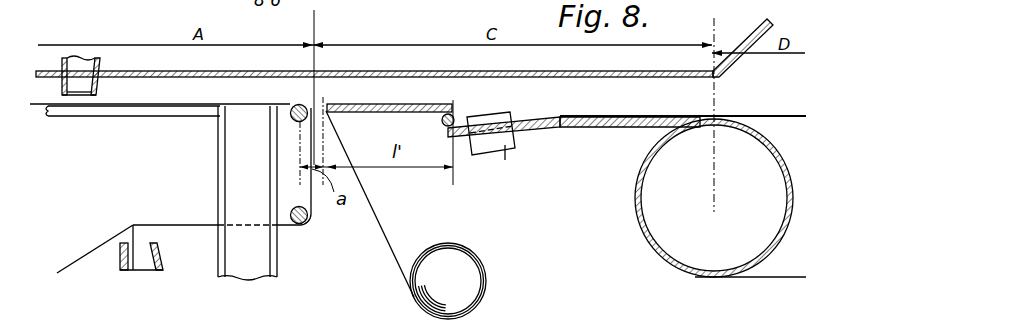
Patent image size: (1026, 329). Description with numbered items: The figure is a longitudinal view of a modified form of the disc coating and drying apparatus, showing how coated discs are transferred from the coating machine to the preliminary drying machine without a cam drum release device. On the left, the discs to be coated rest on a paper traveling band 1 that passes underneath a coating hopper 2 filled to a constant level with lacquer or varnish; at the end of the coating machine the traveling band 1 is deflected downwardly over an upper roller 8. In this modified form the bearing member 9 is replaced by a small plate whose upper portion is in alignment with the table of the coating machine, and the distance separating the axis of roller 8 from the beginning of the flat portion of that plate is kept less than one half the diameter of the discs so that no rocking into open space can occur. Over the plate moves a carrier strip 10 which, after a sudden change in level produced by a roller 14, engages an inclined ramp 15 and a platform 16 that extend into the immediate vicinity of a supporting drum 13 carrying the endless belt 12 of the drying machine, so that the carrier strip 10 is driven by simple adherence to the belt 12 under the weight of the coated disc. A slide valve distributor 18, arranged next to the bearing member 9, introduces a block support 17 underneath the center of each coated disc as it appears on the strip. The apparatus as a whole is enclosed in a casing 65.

The paper traveling band 1 is at (40, 96).
The coating hopper 2 is at (100, 69).
The casing 65 is at (228, 71).
The upper roller 8 is at (292, 106).
The bearing member 9 is at (392, 113).
The carrier strip 10 is at (414, 104).
The endless belt 12 is at (774, 117).
The supporting drum 13 is at (779, 162).
The roller 14 is at (455, 117).
The inclined ramp 15 is at (537, 128).
The platform 16 is at (603, 128).
The block support 17 is at (502, 116).
The slide valve distributor 18 is at (504, 146).